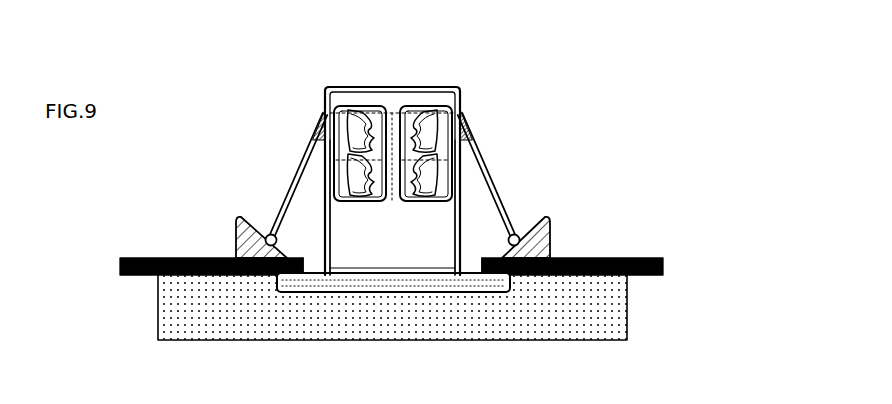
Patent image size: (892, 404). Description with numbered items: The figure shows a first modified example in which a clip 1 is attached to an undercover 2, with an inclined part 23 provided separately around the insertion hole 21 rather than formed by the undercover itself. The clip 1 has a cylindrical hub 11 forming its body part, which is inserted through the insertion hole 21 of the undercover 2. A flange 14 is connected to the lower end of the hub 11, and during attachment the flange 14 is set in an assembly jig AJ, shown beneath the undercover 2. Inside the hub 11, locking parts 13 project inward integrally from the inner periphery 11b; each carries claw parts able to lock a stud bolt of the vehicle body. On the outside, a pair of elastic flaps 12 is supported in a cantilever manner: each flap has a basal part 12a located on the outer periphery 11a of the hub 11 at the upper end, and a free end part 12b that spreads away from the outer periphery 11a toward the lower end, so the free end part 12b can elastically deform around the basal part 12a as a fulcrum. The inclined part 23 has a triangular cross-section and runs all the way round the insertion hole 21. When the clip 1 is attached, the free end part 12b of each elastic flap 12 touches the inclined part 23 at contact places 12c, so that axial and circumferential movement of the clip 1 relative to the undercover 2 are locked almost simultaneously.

The clip 1 is at (376, 197).
The cylindrical hub 11 is at (406, 195).
The outer periphery of the hub 11a is at (430, 253).
The inner periphery of the hub 11b is at (358, 212).
The elastic flap 12 is at (376, 158).
The basal part 12a is at (320, 118).
The free end part 12b is at (268, 222).
The contact place 12c is at (262, 232).
The locking part 13 is at (410, 203).
The flange 14 is at (400, 287).
The undercover 2 is at (411, 289).
The insertion hole 21 is at (478, 272).
The inclined part 23 is at (234, 240).
The assembly jig AJ is at (610, 308).